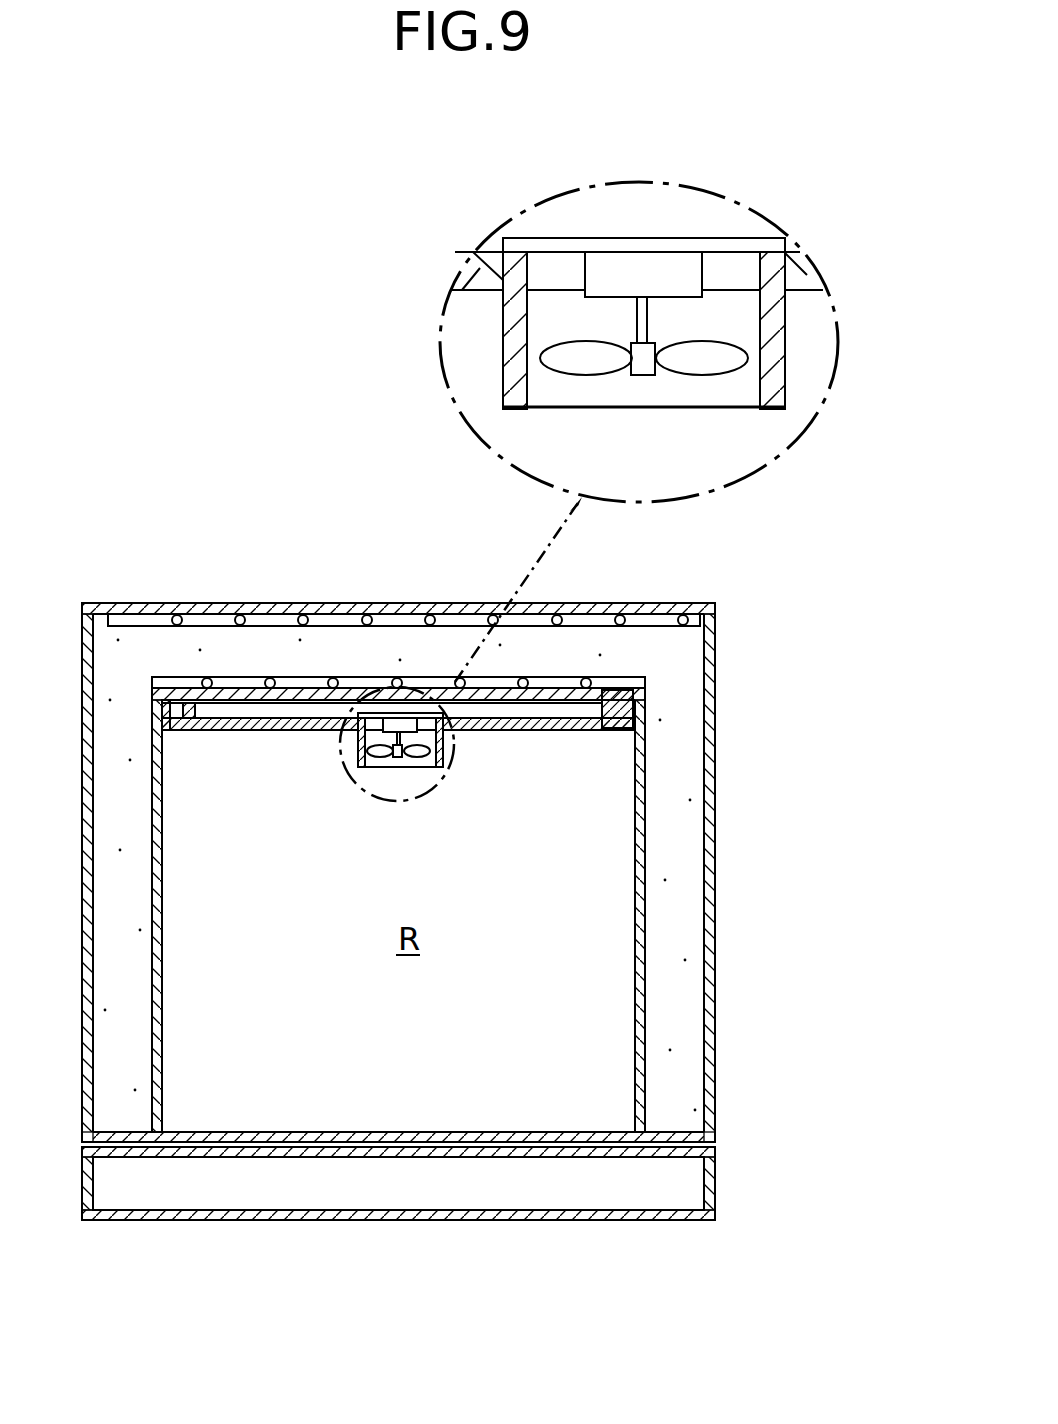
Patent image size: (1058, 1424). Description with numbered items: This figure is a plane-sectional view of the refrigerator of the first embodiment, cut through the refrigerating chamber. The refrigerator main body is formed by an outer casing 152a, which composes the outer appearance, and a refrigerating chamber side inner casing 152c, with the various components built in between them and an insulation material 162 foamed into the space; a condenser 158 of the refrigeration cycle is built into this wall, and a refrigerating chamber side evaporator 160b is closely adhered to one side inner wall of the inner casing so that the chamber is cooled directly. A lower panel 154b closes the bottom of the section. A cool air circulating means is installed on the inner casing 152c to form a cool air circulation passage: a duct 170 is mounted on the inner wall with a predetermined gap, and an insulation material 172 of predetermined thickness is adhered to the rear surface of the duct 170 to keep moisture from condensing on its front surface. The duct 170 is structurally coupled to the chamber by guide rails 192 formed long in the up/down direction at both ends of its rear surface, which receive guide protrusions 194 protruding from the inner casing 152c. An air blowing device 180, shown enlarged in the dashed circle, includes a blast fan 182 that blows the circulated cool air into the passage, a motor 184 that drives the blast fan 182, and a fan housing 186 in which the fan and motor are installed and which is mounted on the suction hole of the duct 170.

The outer casing 152a is at (708, 832).
The refrigerating chamber side inner casing 152c is at (647, 923).
The lower machine room panel 154b is at (398, 1222).
The condenser 158 is at (263, 618).
The refrigerating chamber side evaporator 160b is at (302, 682).
The insulation material 162 is at (693, 1022).
The duct 170 is at (752, 280).
The insulation material 172 is at (728, 245).
The air blowing device 180 is at (316, 314).
The blast fan 182 is at (540, 367).
The motor 184 is at (600, 292).
The fan housing 186 is at (510, 312).
The guide rails 192 is at (620, 702).
The guide protrusions 194 is at (618, 720).